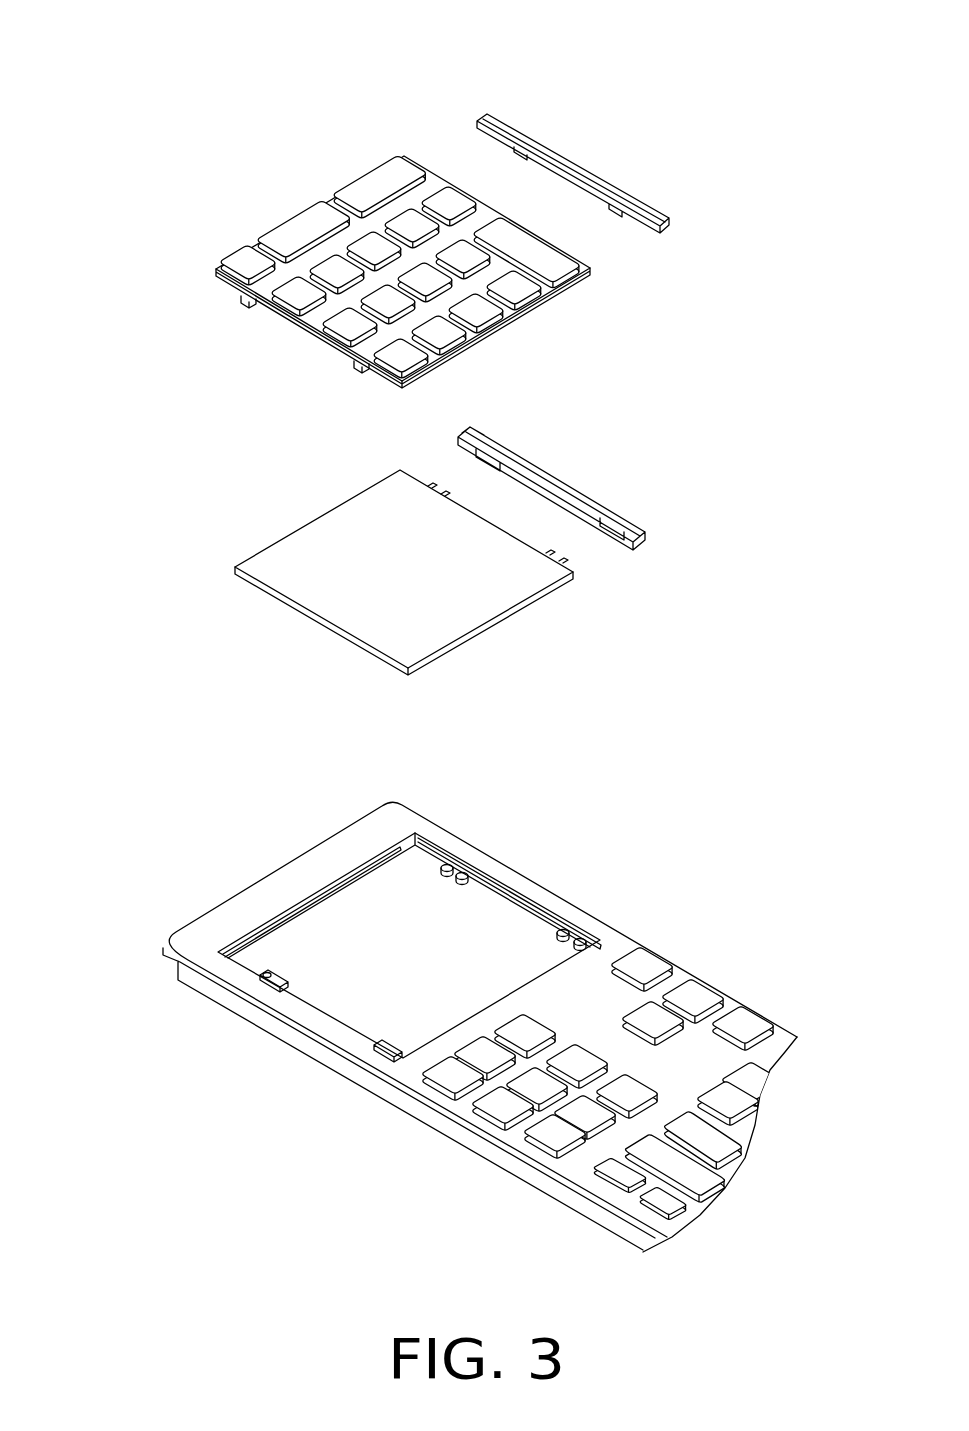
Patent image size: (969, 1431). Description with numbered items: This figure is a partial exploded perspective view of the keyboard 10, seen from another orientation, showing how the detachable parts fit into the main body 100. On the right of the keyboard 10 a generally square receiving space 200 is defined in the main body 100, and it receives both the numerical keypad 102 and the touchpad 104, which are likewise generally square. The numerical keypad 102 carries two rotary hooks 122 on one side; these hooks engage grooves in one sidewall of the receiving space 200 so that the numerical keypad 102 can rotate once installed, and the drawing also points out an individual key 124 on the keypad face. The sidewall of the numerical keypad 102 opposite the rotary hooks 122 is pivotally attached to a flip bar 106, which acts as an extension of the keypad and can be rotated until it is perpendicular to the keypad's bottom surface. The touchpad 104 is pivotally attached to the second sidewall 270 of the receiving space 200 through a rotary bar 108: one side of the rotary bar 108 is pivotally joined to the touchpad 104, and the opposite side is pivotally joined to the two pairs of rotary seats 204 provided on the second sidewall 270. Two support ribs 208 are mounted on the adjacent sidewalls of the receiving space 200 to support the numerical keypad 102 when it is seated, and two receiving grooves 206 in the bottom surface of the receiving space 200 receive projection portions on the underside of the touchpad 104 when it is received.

The keyboard 10 is at (283, 76).
The main body 100 is at (680, 977).
The numerical keypad 102 is at (303, 230).
The touchpad 104 is at (335, 530).
The flip bar 106 is at (572, 165).
The rotary bar 108 is at (547, 482).
The rotary hooks 122 is at (246, 305).
The key 124 is at (528, 288).
The receiving space 200 is at (532, 932).
The rotary seats 204 is at (464, 868).
The receiving grooves 206 is at (266, 985).
The support ribs 208 is at (328, 897).
The second sidewall 270 is at (522, 890).